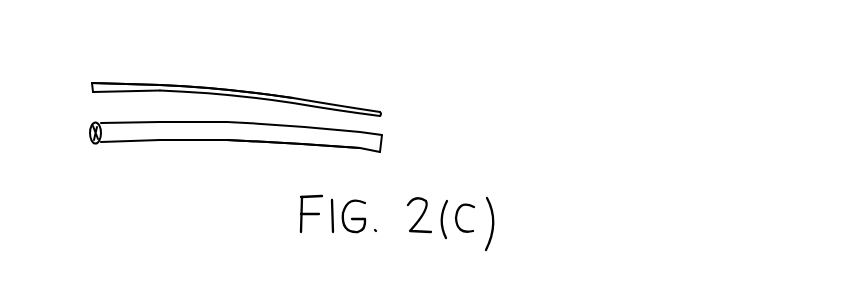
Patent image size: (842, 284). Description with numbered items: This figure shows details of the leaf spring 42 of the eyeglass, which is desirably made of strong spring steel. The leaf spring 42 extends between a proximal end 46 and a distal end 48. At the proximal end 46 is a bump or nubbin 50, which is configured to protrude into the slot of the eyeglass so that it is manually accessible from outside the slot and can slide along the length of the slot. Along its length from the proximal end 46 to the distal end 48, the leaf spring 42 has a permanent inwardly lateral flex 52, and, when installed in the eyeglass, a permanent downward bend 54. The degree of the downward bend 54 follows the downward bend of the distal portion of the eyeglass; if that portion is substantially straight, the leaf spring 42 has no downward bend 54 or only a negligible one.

The leaf spring 42 is at (249, 86).
The proximal end 46 is at (123, 83).
The distal end 48 is at (375, 112).
The bump or nubbin 50 is at (90, 98).
The permanent inwardly lateral flex 52 is at (273, 98).
The permanent downward bend 54 is at (295, 135).